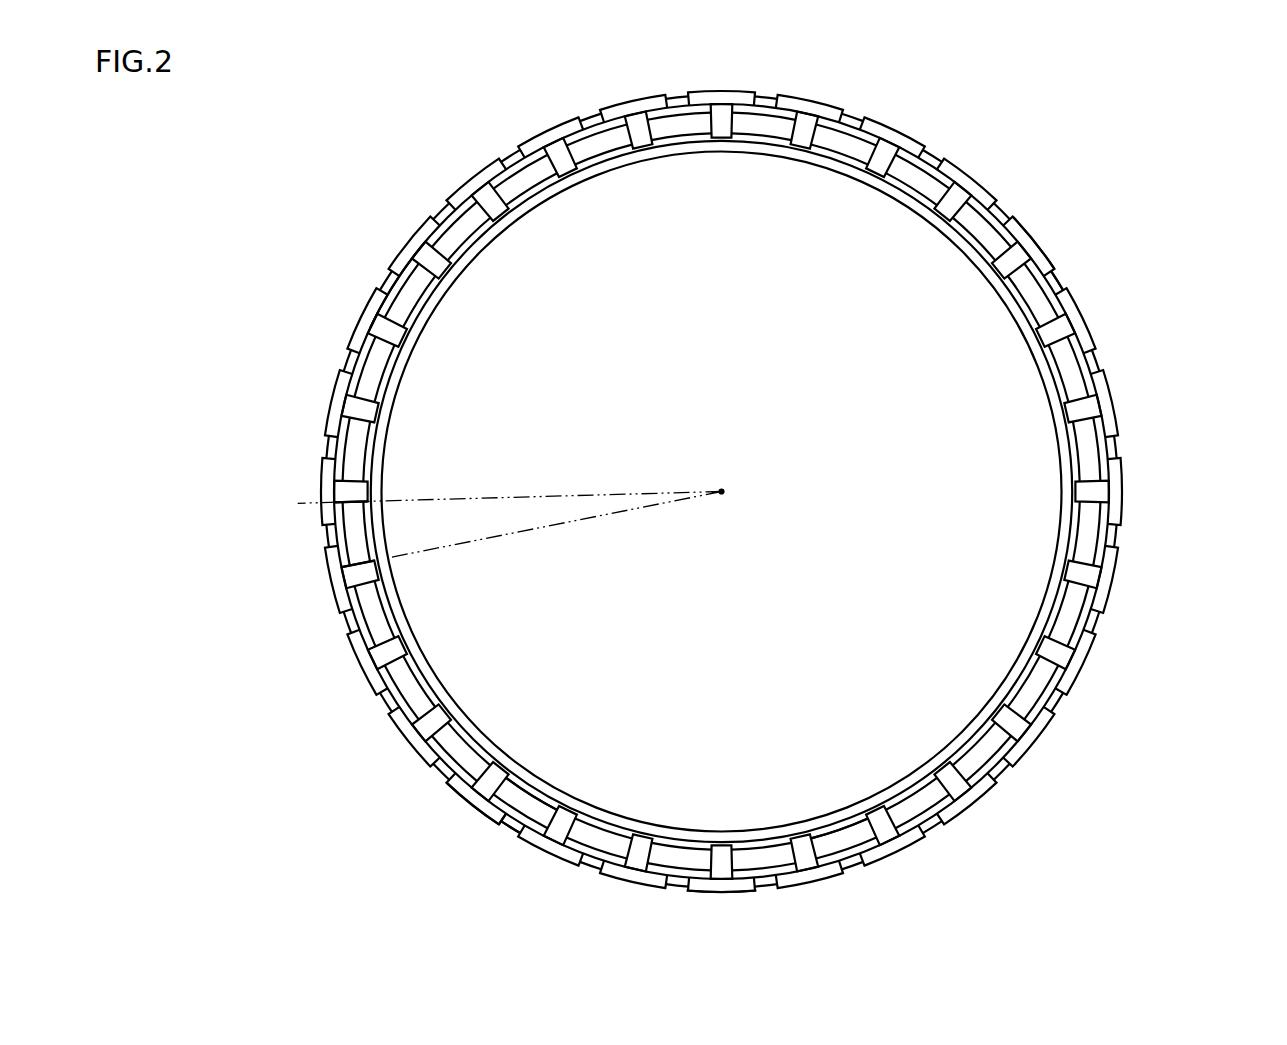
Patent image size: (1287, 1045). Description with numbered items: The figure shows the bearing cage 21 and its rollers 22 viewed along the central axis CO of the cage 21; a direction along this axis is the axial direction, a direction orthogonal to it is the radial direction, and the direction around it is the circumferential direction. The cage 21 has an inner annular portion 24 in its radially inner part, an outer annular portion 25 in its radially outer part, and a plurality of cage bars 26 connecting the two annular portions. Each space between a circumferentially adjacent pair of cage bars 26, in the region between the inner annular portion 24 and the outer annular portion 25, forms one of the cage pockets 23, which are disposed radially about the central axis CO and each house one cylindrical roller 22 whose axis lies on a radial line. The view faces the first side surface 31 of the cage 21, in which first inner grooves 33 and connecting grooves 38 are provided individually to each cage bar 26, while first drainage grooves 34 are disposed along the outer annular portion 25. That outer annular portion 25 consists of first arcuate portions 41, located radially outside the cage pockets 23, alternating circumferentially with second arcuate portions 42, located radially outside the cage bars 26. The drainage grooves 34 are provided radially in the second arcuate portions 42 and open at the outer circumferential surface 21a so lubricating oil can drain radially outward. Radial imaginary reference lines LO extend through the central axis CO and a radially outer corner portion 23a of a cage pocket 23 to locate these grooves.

The cage 21 is at (430, 210).
The outer circumferential surface 21a is at (690, 882).
The rollers 22 is at (652, 95).
The cage pockets 23 is at (628, 106).
The radially outer corner portion 23a is at (333, 503).
The inner annular portion 24 is at (445, 305).
The outer annular portion 25 is at (383, 285).
The cage bars 26 is at (531, 185).
The first side surface 31 is at (832, 850).
The first inner grooves 33 is at (522, 790).
The first drainage grooves 34 is at (1062, 270).
The connecting grooves 38 is at (488, 826).
The first arcuate portions 41 is at (1010, 248).
The second arcuate portions 42 is at (1080, 288).
The central axis CO is at (724, 489).
The reference lines LO is at (420, 500).